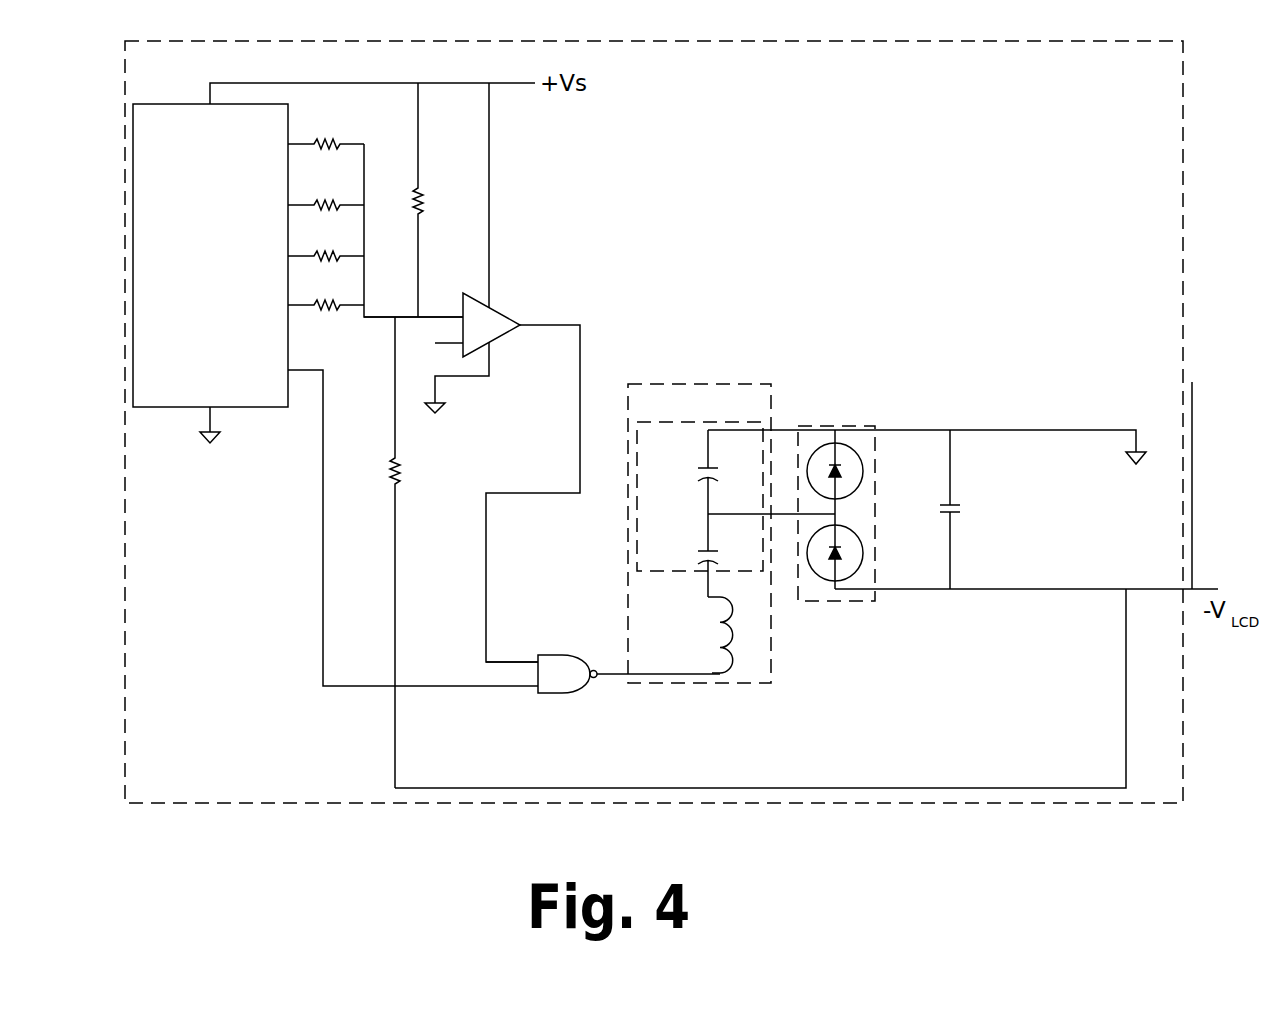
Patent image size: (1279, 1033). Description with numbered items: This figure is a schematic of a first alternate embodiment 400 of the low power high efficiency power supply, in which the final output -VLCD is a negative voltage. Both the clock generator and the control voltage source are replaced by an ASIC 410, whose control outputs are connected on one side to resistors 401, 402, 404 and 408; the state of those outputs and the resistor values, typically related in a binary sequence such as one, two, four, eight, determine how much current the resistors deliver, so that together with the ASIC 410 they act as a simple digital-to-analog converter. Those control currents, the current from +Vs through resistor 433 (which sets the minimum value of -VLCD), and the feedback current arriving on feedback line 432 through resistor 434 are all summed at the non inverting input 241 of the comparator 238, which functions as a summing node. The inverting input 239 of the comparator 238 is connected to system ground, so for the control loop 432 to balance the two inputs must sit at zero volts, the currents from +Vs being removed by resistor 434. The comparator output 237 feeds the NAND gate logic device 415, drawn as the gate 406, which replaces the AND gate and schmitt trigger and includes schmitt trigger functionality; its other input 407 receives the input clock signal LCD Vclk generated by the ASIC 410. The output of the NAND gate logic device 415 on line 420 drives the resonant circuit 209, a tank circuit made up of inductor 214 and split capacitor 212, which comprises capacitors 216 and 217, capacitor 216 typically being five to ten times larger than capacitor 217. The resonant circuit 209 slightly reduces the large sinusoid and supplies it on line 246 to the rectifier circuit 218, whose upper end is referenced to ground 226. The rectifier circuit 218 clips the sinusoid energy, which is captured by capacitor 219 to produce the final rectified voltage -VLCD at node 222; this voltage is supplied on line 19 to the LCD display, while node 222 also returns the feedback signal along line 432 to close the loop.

The first alternate embodiment of the power supply 400 is at (1058, 108).
The ASIC 410 is at (190, 178).
The resistor 401 is at (316, 142).
The resistor 402 is at (316, 203).
The resistor 404 is at (316, 255).
The resistor 408 is at (322, 311).
The resistor 433 is at (418, 195).
The resistor 434 is at (400, 478).
The comparator 238 is at (498, 338).
The non inverting input 241 is at (440, 317).
The inverting input 239 is at (455, 343).
The amplifier output 237 is at (540, 325).
The feedback line 432 is at (930, 787).
The NAND gate 406 is at (525, 655).
The NAND gate logic device 415 is at (562, 654).
The input of NAND gate logic 407 is at (525, 692).
The output line 420 is at (600, 680).
The resonant circuit 209 is at (690, 414).
The split capacitor 212 is at (689, 458).
The capacitor 216 is at (705, 478).
The capacitor 217 is at (705, 560).
The inductor 214 is at (704, 635).
The line 246 is at (782, 514).
The ground 226 is at (1136, 447).
The rectifier circuit 218 is at (877, 514).
The capacitor 219 is at (952, 514).
The -VLCD node 222 is at (1210, 587).
The line 19 is at (1192, 405).